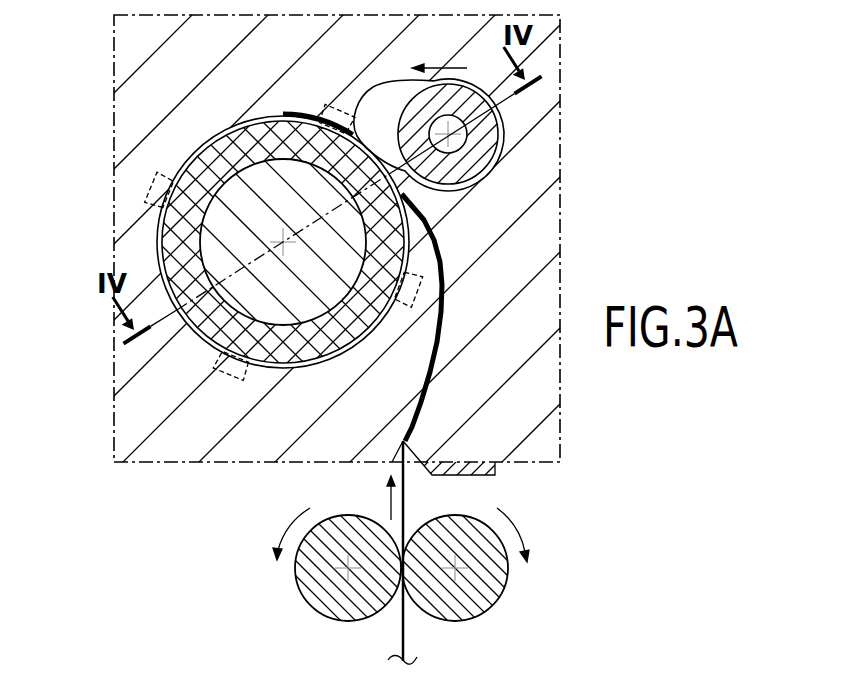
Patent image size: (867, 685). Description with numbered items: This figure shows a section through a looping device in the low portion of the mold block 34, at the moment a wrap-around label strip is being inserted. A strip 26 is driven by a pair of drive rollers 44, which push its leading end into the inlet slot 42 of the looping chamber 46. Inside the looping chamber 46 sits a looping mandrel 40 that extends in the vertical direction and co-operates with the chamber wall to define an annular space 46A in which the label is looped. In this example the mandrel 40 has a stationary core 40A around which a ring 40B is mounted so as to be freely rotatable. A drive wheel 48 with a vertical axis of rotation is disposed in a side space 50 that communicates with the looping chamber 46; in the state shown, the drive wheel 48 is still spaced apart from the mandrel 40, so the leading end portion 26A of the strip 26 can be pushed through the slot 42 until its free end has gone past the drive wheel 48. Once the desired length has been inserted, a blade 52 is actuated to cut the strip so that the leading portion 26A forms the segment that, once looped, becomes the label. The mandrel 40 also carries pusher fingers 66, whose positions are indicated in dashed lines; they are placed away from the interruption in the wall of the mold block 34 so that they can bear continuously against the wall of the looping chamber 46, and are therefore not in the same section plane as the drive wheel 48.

The strip 26 is at (404, 497).
The leading end portion of the strip 26A is at (344, 121).
The mold block 34 is at (130, 115).
The looping mandrel 40 is at (266, 130).
The stationary core 40A is at (303, 295).
The ring 40B is at (181, 218).
The inlet slot 42 is at (422, 396).
The drive rollers 44 is at (487, 585).
The looping chamber 46 is at (200, 168).
The annular space 46A is at (203, 339).
The drive wheel 48 is at (463, 170).
The side space 50 is at (382, 107).
The blade 52 is at (495, 476).
The pusher fingers 66 is at (150, 177).